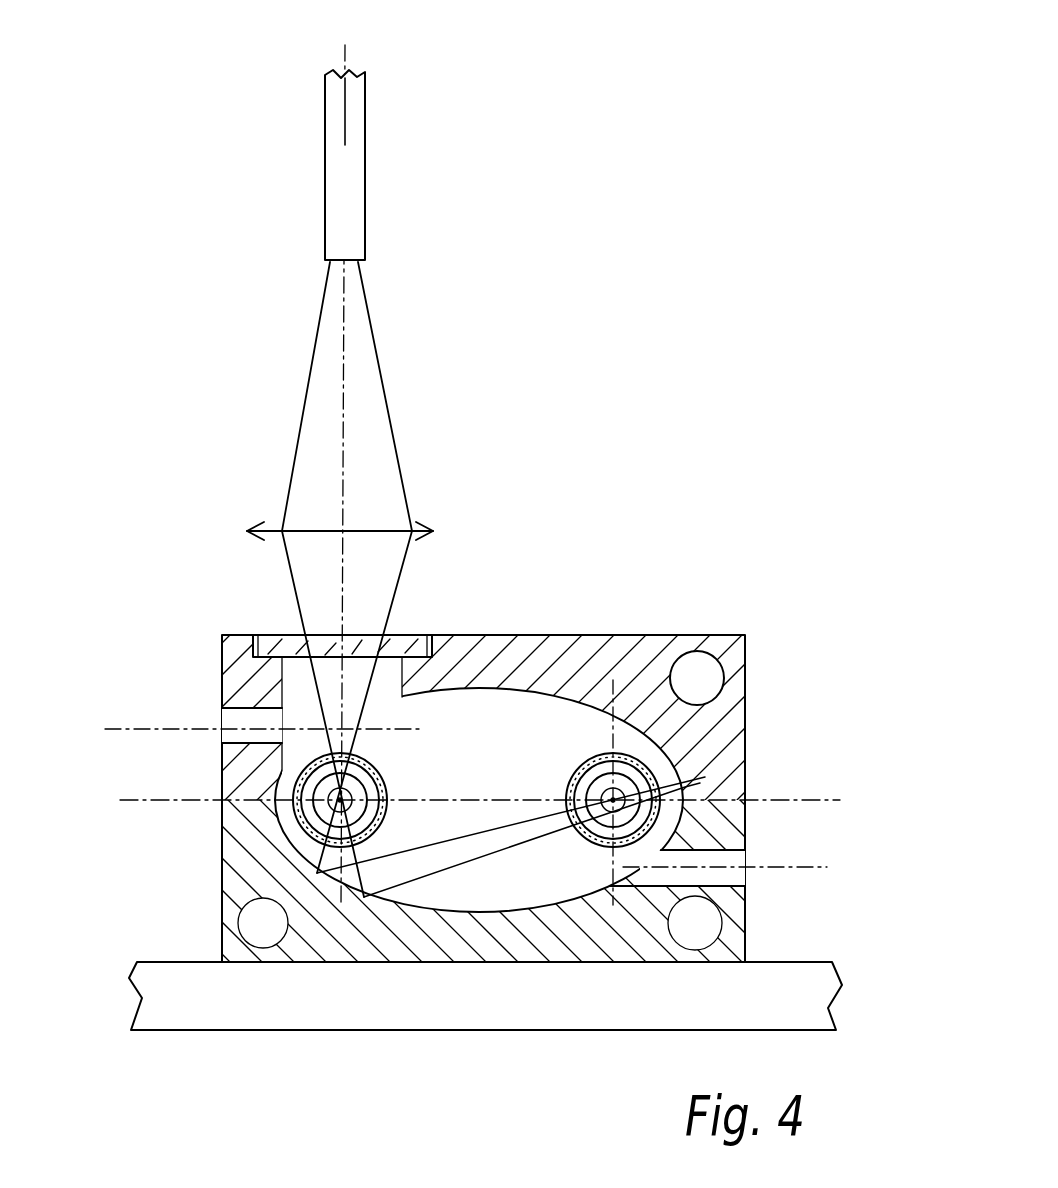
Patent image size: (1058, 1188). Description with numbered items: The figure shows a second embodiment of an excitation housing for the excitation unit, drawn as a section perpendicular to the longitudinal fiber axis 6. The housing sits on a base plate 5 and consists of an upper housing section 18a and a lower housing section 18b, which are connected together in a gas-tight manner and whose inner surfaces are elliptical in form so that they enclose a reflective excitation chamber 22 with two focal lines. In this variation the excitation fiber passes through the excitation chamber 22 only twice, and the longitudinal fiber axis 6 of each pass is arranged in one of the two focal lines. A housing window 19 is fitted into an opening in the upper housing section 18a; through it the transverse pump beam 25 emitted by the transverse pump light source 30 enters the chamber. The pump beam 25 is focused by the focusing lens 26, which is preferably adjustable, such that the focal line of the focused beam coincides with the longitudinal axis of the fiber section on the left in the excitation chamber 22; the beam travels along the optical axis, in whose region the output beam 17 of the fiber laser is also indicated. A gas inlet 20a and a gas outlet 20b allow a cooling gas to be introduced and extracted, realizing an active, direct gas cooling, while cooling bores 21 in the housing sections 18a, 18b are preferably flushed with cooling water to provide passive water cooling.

The base plate 5 is at (150, 1013).
The longitudinal fiber axis 6 is at (350, 796).
The output beam 17 is at (340, 418).
The upper housing section 18a is at (545, 658).
The lower housing section 18b is at (226, 880).
The housing window 19 is at (400, 637).
The gas inlet 20a is at (724, 863).
The gas outlet 20b is at (232, 720).
The cooling bores 21 is at (697, 678).
The excitation chamber 22 is at (512, 769).
The transverse pump beam 25 is at (362, 405).
The focusing lens 26 is at (378, 527).
The transverse pump light source 30 is at (355, 236).